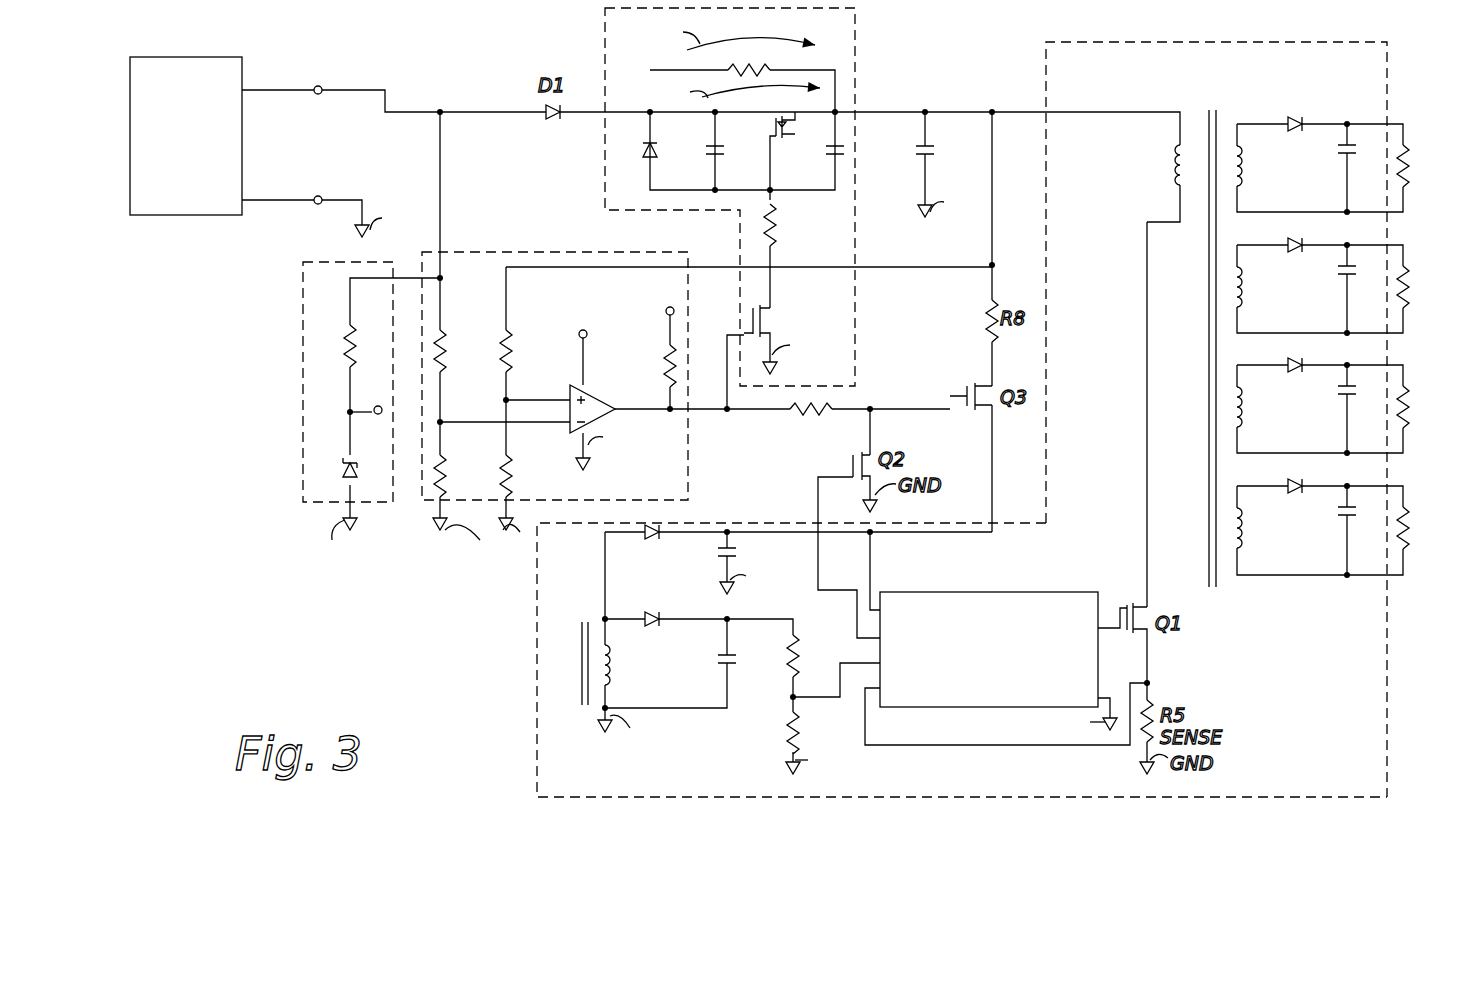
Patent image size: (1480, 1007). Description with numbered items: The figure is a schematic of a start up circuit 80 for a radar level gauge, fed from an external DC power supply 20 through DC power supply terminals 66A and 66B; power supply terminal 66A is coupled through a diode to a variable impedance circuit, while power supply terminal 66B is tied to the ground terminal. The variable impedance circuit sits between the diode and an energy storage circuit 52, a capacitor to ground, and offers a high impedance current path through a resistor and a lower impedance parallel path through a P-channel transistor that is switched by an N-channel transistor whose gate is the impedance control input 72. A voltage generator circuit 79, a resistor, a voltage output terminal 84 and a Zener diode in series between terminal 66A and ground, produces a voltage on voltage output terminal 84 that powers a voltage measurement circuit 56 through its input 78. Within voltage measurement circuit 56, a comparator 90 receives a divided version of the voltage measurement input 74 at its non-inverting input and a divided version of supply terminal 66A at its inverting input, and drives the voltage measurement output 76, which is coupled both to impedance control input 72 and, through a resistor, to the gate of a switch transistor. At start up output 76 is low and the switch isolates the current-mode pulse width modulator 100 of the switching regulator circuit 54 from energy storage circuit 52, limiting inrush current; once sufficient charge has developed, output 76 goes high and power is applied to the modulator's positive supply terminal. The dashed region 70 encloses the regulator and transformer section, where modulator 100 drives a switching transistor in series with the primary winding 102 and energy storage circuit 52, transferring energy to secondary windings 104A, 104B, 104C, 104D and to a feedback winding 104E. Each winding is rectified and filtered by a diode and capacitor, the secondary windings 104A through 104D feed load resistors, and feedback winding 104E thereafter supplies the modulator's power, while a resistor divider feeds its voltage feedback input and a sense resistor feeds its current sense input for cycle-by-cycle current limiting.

The external DC power supply 20 is at (150, 57).
The DC power supply terminal 66A is at (320, 94).
The DC power supply terminal 66B is at (315, 204).
The start up circuit 80 is at (558, 52).
The energy storage circuit 52 is at (905, 154).
The primary winding 102 is at (1160, 152).
The power converter section 70 is at (1405, 108).
The voltage generator circuit 79 is at (303, 485).
The voltage output terminal 84 is at (376, 406).
The input 78 is at (583, 364).
The comparator 90 is at (603, 398).
The impedance control input 72 is at (727, 335).
The voltage measurement input 74 is at (980, 268).
The voltage measurement output 76 is at (722, 415).
The voltage measurement circuit 56 is at (425, 500).
The switching regulator circuit 54 is at (537, 656).
The current-mode pulse width modulator 100 is at (1050, 592).
The secondary winding 104A is at (1244, 180).
The secondary winding 104B is at (1244, 301).
The secondary winding 104C is at (1244, 421).
The secondary winding 104D is at (1244, 543).
The feedback winding 104E is at (603, 676).